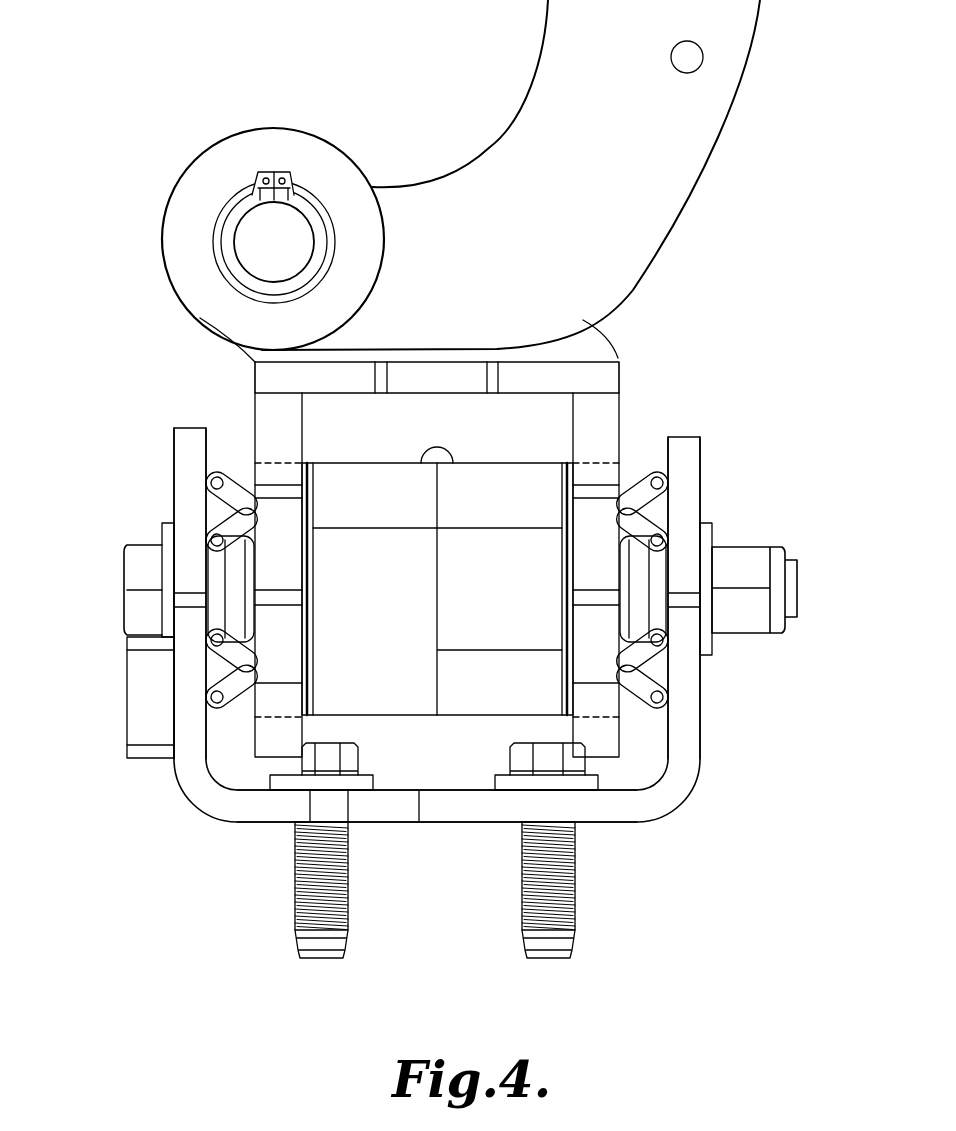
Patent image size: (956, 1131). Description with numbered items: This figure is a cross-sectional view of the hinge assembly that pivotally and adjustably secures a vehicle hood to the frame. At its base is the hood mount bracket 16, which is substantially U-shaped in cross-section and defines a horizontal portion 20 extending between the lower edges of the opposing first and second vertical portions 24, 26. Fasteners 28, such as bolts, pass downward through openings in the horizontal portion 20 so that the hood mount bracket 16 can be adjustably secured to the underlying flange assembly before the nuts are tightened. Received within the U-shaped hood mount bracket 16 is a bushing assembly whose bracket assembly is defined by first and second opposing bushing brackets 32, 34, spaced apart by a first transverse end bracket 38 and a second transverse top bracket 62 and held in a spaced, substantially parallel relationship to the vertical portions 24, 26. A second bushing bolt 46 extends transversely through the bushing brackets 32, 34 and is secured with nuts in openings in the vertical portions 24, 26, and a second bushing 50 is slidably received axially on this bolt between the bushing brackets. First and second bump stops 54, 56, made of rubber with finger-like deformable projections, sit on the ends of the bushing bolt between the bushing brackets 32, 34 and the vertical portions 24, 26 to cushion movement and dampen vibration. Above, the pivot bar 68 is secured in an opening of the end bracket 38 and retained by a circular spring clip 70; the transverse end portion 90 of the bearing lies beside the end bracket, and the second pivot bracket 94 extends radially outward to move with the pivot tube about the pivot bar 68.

The hood mount bracket 16 is at (420, 649).
The horizontal portion 20 is at (598, 812).
The first vertical portion 24 is at (183, 670).
The second vertical portion 26 is at (684, 668).
The fasteners 28 is at (302, 936).
The first bushing bracket 32 is at (273, 725).
The second bushing bracket 34 is at (612, 740).
The first transverse end bracket 38 is at (590, 340).
The second bushing bolt 46 is at (125, 572).
The second bushing 50 is at (535, 472).
The first bump stop 54 is at (232, 448).
The second bump stop 56 is at (656, 462).
The second transverse top bracket 62 is at (600, 367).
The pivot bar 68 is at (318, 205).
The circular spring clip 70 is at (280, 172).
The transverse end portion 90 is at (197, 192).
The second pivot bracket 94 is at (228, 142).